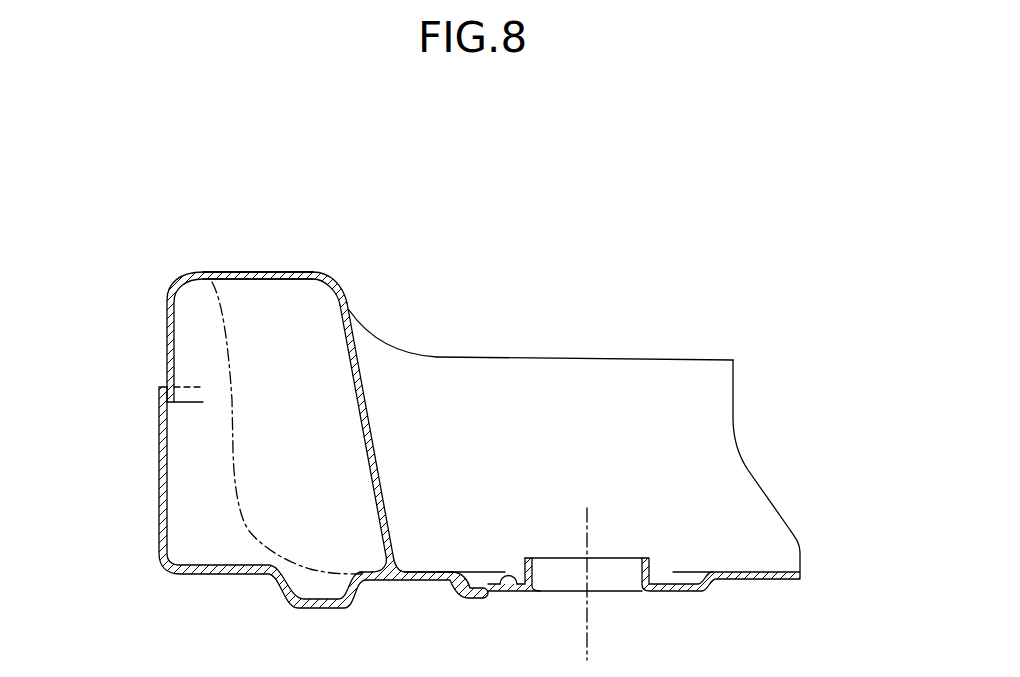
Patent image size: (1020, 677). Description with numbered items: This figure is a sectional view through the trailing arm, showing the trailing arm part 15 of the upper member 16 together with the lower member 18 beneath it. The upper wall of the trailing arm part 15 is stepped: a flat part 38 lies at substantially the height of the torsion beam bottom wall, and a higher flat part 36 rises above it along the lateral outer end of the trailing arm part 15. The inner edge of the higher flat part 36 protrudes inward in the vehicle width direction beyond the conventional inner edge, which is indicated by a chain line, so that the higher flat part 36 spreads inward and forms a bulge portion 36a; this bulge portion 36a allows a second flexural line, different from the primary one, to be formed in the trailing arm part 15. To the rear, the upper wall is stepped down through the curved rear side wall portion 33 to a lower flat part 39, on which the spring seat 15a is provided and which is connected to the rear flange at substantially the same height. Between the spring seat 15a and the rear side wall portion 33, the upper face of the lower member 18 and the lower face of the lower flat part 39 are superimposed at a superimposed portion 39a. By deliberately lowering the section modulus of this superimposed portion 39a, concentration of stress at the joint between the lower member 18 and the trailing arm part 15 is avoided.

The trailing arm part 15 is at (566, 333).
The spring seat 15a is at (513, 590).
The upper member 16 is at (158, 331).
The lower member 18 is at (156, 486).
The rear side wall portion 33 is at (365, 395).
The higher flat part 36 is at (241, 268).
The bulge portion 36a is at (288, 271).
The flat part 38 is at (654, 359).
The lower flat part 39 is at (412, 563).
The superimposed portion 39a is at (429, 571).